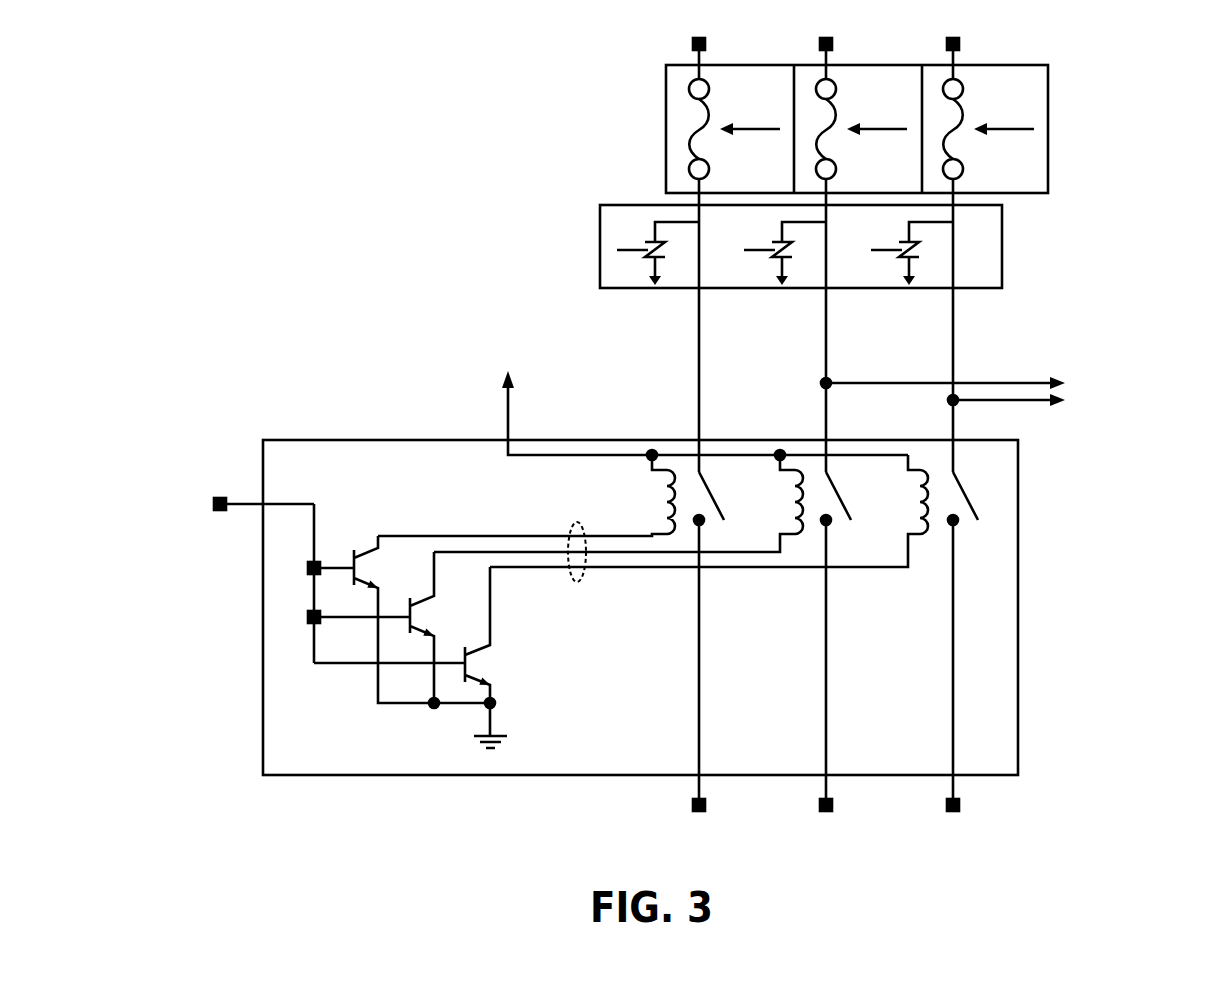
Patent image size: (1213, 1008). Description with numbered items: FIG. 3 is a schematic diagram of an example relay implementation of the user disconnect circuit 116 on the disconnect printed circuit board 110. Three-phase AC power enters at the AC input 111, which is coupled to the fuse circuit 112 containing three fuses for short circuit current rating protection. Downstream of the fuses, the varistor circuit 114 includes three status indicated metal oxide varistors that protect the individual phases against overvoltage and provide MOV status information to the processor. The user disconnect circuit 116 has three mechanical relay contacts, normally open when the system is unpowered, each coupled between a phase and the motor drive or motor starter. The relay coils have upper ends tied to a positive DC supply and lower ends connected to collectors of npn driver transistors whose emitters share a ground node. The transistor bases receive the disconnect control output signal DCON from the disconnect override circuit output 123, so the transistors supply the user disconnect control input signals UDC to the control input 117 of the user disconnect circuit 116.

The disconnect printed circuit board 110 is at (270, 174).
The AC input 111 is at (678, 27).
The fuse circuit 112 is at (1048, 106).
The varistor circuit 114 is at (600, 206).
The user disconnect circuit 116 is at (1018, 504).
The control input 117 is at (577, 582).
The output 123 is at (230, 498).